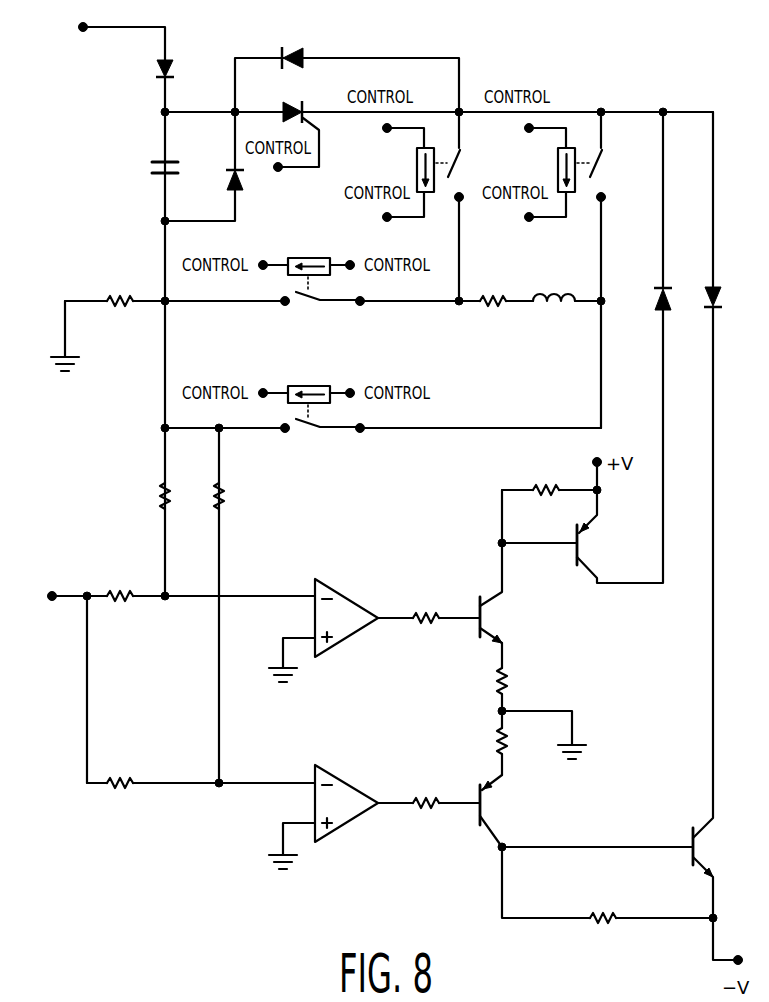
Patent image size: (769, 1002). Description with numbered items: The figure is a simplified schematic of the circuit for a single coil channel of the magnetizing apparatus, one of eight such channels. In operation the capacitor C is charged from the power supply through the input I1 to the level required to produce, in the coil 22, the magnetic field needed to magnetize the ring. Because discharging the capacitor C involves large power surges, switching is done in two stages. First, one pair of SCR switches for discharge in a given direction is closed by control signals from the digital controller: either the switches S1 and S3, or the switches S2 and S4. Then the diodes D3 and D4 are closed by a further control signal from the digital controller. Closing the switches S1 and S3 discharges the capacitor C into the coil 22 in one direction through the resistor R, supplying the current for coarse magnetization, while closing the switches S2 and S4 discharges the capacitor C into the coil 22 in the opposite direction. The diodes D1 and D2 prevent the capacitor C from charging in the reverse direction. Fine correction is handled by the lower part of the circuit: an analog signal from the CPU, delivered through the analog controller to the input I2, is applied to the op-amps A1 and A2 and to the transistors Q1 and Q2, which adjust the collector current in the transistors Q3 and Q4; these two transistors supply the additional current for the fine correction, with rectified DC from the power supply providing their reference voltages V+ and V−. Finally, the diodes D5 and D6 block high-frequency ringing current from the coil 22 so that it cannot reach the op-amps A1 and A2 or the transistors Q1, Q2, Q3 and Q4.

The input I1 is at (104, 38).
The analog input I2 is at (35, 596).
The diode D1 is at (182, 86).
The diode D2 is at (216, 166).
The diode D3 is at (282, 128).
The diode D4 is at (347, 69).
The diode D5 is at (624, 347).
The diode D6 is at (704, 475).
The capacitor C is at (154, 168).
The SCR switch S1 is at (435, 173).
The SCR switch S2 is at (577, 173).
The SCR switch S3 is at (312, 422).
The SCR switch S4 is at (312, 295).
The resistor R is at (493, 287).
The coil 22 is at (553, 306).
The op-amp A1 is at (346, 625).
The op-amp A2 is at (346, 812).
The transistor Q1 is at (500, 620).
The transistor Q2 is at (500, 811).
The transistor Q3 is at (598, 527).
The transistor Q4 is at (713, 873).